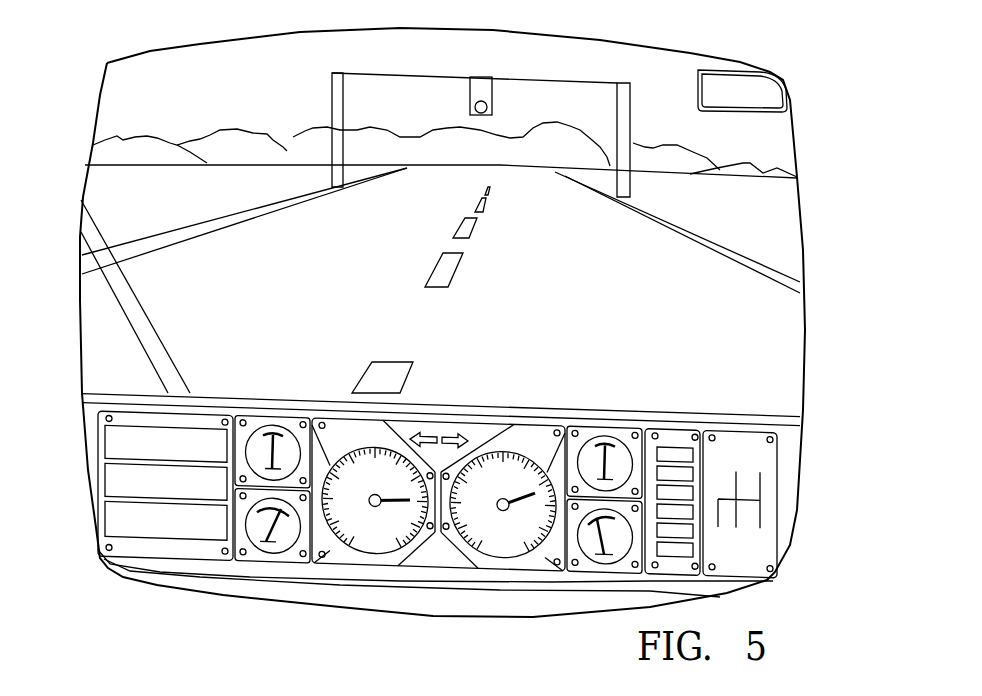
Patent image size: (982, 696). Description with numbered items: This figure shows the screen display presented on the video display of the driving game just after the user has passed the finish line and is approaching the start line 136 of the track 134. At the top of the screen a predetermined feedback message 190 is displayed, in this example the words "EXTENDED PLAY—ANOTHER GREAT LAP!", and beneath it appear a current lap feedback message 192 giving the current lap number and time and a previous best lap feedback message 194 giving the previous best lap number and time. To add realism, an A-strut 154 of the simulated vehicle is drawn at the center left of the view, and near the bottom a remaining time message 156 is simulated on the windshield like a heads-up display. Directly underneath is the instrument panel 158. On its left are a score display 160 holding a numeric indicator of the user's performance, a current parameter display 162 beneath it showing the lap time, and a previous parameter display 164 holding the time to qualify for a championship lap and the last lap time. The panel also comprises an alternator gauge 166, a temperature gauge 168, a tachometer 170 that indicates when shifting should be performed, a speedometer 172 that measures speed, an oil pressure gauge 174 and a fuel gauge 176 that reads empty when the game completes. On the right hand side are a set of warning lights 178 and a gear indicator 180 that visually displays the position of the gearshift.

The track 134 is at (713, 242).
The start line 136 is at (630, 192).
The A-strut 154 is at (142, 318).
The remaining time message 156 is at (481, 367).
The instrument panel 158 is at (634, 405).
The score display 160 is at (110, 442).
The current parameter display 162 is at (112, 487).
The previous parameter display 164 is at (100, 527).
The alternator gauge 166 is at (270, 423).
The temperature gauge 168 is at (273, 557).
The tachometer 170 is at (377, 548).
The speedometer 172 is at (507, 557).
The oil pressure gauge 174 is at (600, 430).
The fuel gauge 176 is at (600, 568).
The set of warning lights 178 is at (688, 433).
The gear indicator 180 is at (768, 517).
The predetermined feedback message 190 is at (330, 72).
The current lap feedback message 192 is at (249, 266).
The previous best lap feedback message 194 is at (648, 287).